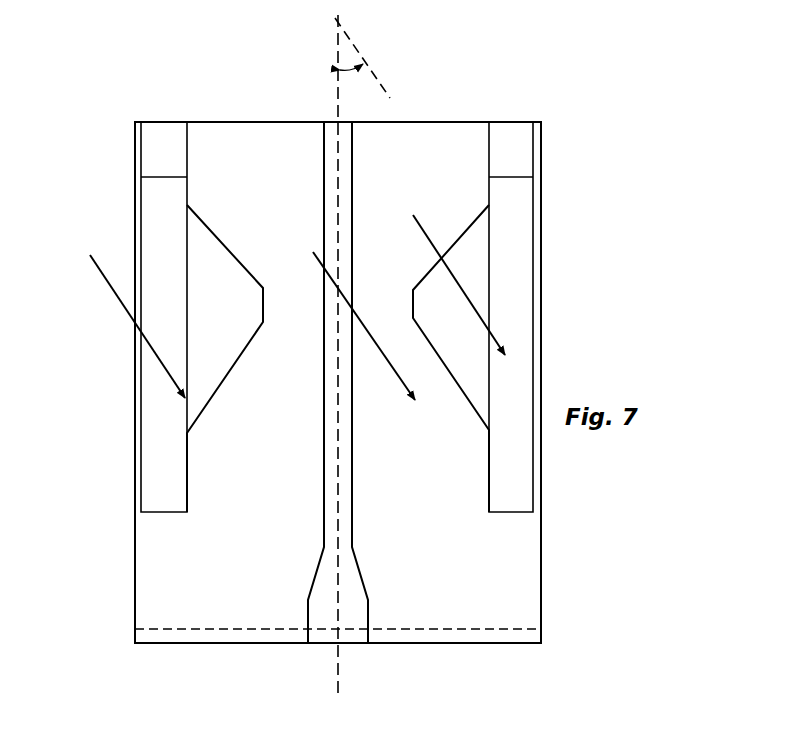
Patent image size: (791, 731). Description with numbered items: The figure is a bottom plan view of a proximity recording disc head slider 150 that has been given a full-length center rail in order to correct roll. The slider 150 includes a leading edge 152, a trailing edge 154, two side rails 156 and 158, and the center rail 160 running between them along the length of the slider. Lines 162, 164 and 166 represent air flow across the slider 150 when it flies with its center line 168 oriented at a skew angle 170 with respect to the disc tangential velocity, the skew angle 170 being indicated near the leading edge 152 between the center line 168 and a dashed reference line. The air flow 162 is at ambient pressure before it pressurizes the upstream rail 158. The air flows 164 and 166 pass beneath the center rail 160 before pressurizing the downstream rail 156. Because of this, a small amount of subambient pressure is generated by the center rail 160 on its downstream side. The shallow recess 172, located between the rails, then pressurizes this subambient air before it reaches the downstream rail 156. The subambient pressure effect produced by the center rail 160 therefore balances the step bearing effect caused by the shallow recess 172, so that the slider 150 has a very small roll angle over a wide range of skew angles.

The slider 150 is at (100, 180).
The leading edge 152 is at (288, 86).
The trailing edge 154 is at (208, 645).
The side rail 156 is at (512, 120).
The side rail 158 is at (168, 120).
The center rail 160 is at (323, 487).
The air flow 162 is at (110, 298).
The air flow 164 is at (390, 372).
The air flow 166 is at (463, 288).
The center line 168 is at (338, 50).
The skew angle 170 is at (358, 50).
The shallow recess 172 is at (278, 204).